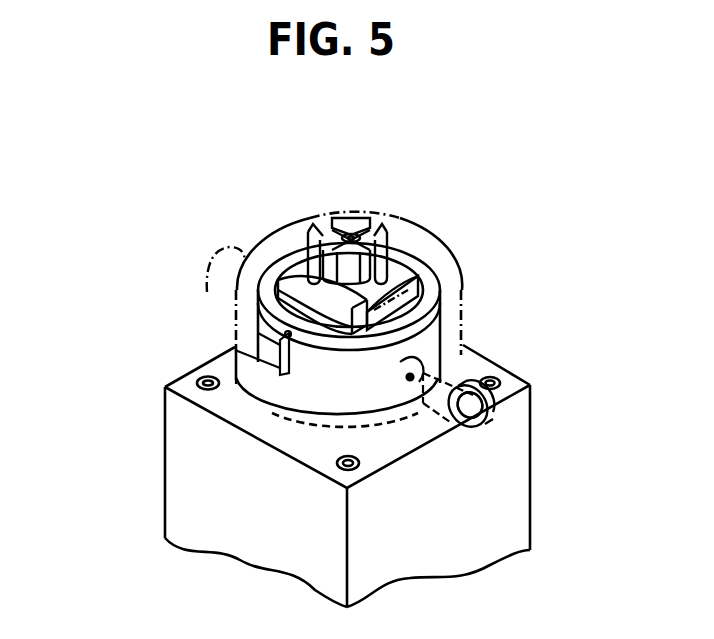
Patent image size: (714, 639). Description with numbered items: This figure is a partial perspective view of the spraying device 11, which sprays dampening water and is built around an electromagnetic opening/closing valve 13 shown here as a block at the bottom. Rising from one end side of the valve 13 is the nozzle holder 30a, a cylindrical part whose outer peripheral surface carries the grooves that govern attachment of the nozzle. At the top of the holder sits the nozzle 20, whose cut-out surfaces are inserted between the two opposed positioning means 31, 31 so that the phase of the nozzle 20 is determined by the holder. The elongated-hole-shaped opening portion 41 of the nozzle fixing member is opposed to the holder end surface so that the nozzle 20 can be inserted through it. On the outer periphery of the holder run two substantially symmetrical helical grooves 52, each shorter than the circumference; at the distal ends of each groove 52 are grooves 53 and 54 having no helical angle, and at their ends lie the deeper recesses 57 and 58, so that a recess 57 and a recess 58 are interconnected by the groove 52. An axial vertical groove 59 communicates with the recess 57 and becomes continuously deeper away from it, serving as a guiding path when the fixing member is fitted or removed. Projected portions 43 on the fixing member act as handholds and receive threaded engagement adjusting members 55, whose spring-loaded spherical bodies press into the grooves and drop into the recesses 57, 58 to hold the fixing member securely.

The spraying device 11 is at (128, 511).
The electromagnetic opening/closing valve 13 is at (526, 518).
The nozzle 20 is at (351, 219).
The nozzle holder 30a is at (461, 268).
The positioning means 31 is at (303, 262).
The opening portion 41 is at (290, 250).
The projected portions 43 is at (476, 427).
The helical groove 52 is at (461, 337).
The groove having no helical angle 53 is at (280, 355).
The groove having no helical angle 54 is at (408, 375).
The engagement adjusting member 55 is at (490, 420).
The recess 57 is at (257, 372).
The recess 58 is at (440, 380).
The vertical groove 59 is at (416, 261).